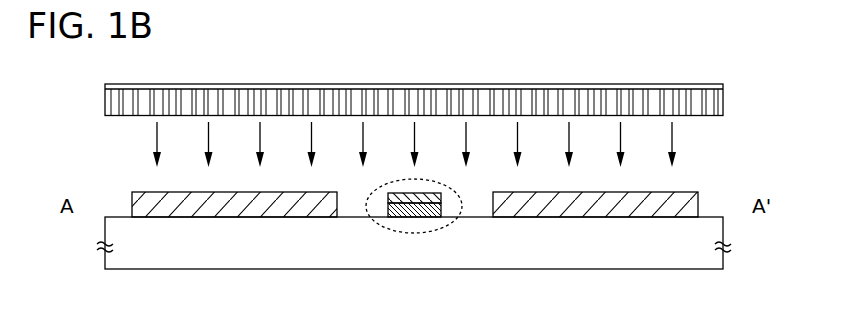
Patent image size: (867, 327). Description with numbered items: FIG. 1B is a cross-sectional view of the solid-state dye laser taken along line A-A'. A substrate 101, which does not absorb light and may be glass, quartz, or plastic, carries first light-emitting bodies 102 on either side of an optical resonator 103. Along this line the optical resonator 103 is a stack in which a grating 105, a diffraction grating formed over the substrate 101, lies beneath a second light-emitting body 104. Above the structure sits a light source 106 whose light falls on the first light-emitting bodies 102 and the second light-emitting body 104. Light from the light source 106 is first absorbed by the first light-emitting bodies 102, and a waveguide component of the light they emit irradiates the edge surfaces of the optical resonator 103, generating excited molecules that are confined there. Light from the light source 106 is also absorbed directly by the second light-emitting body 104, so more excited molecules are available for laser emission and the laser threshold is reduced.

The substrate 101 is at (197, 262).
The first light-emitting bodies 102 is at (145, 197).
The optical resonator 103 is at (400, 235).
The second light-emitting body 104 is at (437, 198).
The grating 105 is at (435, 218).
The light source 106 is at (729, 85).